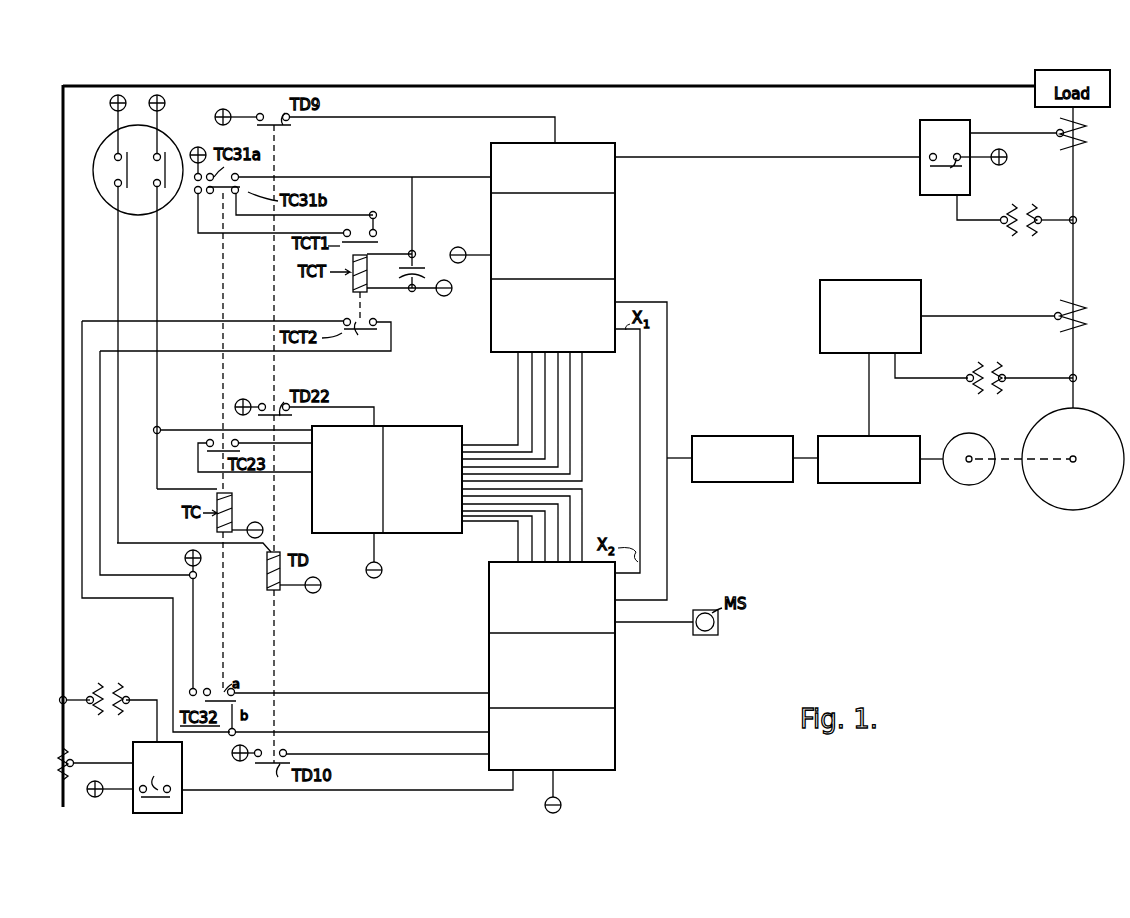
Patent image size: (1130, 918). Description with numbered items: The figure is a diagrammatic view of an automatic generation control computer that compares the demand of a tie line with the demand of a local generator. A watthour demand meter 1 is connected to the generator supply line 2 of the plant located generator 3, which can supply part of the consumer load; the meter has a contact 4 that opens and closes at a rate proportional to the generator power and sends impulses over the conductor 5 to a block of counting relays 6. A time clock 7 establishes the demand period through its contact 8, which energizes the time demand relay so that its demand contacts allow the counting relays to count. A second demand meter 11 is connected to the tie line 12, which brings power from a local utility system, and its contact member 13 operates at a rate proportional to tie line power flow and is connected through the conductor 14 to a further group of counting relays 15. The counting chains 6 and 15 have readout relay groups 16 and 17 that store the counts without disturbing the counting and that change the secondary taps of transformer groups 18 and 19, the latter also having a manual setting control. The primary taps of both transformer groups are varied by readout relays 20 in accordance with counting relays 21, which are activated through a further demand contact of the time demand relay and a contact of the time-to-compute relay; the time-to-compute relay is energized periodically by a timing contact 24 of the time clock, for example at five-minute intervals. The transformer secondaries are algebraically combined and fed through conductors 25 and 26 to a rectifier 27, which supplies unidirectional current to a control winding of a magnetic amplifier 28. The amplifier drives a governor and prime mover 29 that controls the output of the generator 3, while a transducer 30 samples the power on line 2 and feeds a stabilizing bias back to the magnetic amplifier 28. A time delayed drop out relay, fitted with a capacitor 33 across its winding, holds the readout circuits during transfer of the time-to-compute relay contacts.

The watthour demand meter 1 is at (960, 146).
The generator supply line 2 is at (1075, 274).
The plant located generator 3 is at (1054, 413).
The contact 4 is at (946, 172).
The conductor 5 is at (760, 157).
The counting relays 6 is at (586, 143).
The time clock 7 is at (138, 155).
The contact 8 is at (130, 158).
The demand meter 11 is at (175, 777).
The tie line 12 is at (64, 630).
The contact member 13 is at (157, 779).
The conductor 14 is at (362, 794).
The counting relays 15 is at (616, 735).
The readout relay group 16 is at (491, 203).
The readout relay group 17 is at (616, 674).
The transformer group 18 is at (628, 291).
The transformer group 19 is at (489, 580).
The readout relays 20 is at (405, 534).
The counting relays 21 is at (380, 426).
The timing contact 24 is at (163, 172).
The conductor 25 is at (668, 380).
The conductor 26 is at (668, 516).
The rectifier 27 is at (774, 435).
The magnetic amplifier 28 is at (891, 435).
The governor and prime mover 29 is at (929, 435).
The transducer 30 is at (869, 278).
The capacitor 33 is at (415, 268).